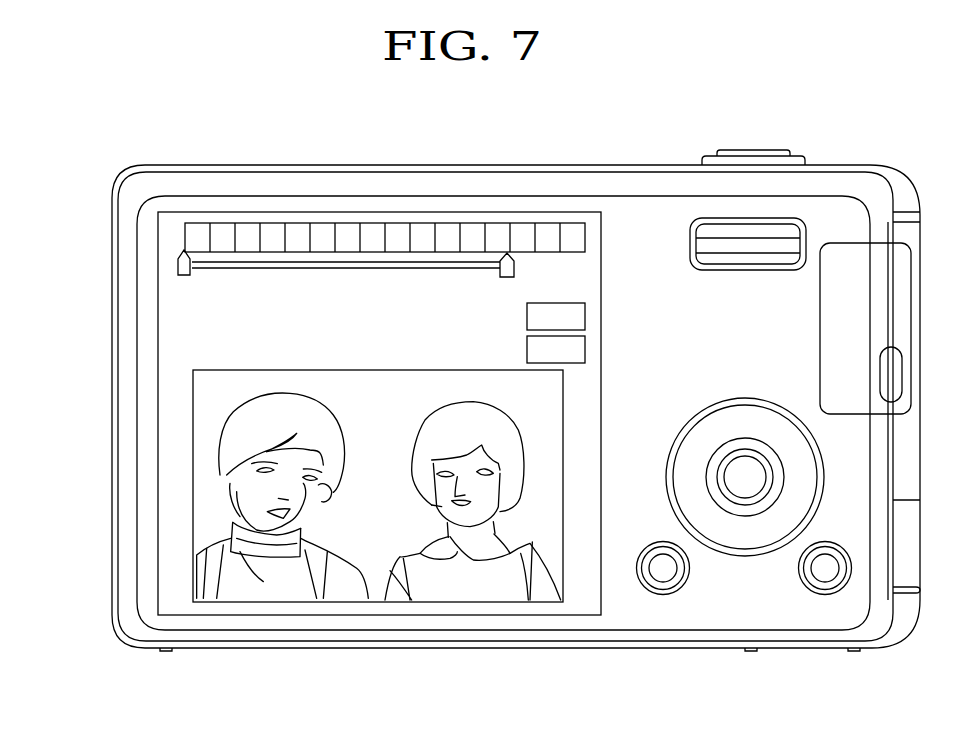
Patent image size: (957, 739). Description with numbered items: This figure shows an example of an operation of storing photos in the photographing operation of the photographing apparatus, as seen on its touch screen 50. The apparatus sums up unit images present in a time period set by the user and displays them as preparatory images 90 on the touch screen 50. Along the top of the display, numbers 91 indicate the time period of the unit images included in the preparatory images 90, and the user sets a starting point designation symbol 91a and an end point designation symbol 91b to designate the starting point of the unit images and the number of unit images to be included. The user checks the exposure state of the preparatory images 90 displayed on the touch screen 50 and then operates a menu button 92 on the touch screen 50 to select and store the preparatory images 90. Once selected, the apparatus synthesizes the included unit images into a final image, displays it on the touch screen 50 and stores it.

The touch screen 50 is at (150, 468).
The preparatory images 90 is at (372, 604).
The numbers 91 is at (185, 233).
The starting point designation symbol 91a is at (178, 264).
The end point designation symbol 91b is at (507, 254).
The menu button 92 is at (585, 318).